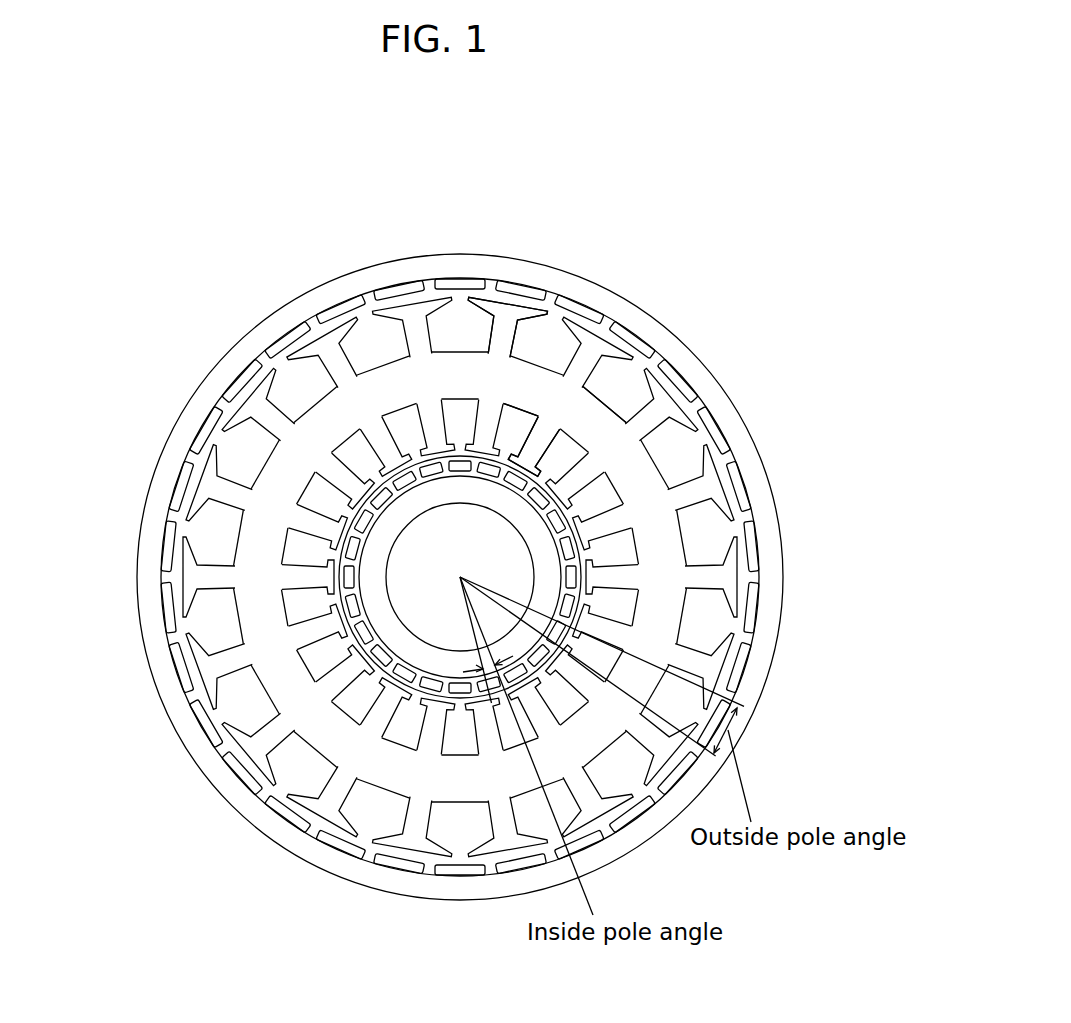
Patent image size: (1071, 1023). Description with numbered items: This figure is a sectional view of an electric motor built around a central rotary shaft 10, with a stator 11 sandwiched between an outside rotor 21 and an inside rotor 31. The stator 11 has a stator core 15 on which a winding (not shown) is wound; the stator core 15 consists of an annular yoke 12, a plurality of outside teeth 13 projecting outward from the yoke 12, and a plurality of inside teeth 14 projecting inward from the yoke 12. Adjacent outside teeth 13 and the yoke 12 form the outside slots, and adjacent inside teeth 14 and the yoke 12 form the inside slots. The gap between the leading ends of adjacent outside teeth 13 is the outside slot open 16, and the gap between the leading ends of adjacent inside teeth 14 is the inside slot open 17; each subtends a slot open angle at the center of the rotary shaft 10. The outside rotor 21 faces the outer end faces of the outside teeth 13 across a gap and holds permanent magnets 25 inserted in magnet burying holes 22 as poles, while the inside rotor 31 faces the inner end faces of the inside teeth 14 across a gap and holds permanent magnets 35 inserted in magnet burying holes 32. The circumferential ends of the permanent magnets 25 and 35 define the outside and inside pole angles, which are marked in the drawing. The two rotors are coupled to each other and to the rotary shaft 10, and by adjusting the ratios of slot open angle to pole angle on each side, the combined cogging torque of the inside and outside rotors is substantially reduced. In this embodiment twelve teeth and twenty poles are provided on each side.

The rotary shaft 10 is at (450, 542).
The stator 11 is at (504, 535).
The yoke 12 is at (648, 512).
The outside teeth 13 is at (497, 345).
The inside teeth 14 is at (533, 452).
The stator core 15 is at (660, 575).
The outside slot open 16 is at (640, 365).
The inside slot open 17 is at (510, 453).
The outside rotor 21 is at (427, 569).
The magnet burying holes 22 is at (185, 462).
The permanent magnets 25 is at (183, 487).
The inside rotor 31 is at (327, 668).
The magnet burying holes 32 is at (368, 640).
The permanent magnets 35 is at (378, 660).